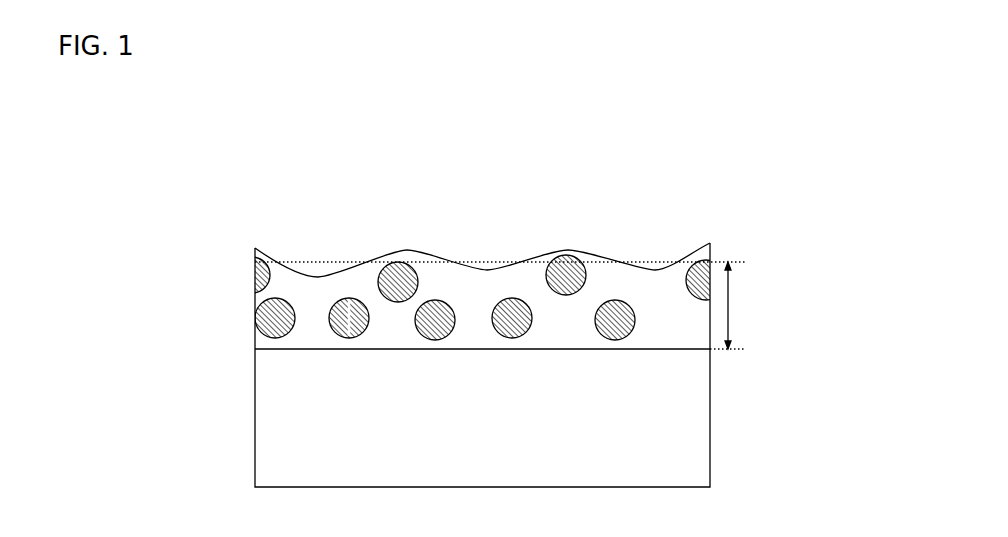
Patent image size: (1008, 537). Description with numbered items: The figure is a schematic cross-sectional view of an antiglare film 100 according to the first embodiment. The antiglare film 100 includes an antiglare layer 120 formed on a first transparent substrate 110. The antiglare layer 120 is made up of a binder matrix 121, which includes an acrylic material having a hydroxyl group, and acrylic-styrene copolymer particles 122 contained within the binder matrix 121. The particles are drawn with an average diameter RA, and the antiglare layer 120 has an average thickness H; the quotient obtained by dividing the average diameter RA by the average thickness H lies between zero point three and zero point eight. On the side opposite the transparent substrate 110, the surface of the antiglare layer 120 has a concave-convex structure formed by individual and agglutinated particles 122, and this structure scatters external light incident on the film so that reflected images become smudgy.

The antiglare film 100 is at (508, 89).
The transparent substrate 110 is at (710, 437).
The antiglare layer 120 is at (545, 251).
The binder matrix 121 is at (630, 283).
The acrylic-styrene copolymer particles 122 is at (400, 262).
The average diameter of the acrylic-styrene copolymer particles RA is at (328, 310).
The average thickness of the antiglare layer H is at (738, 305).